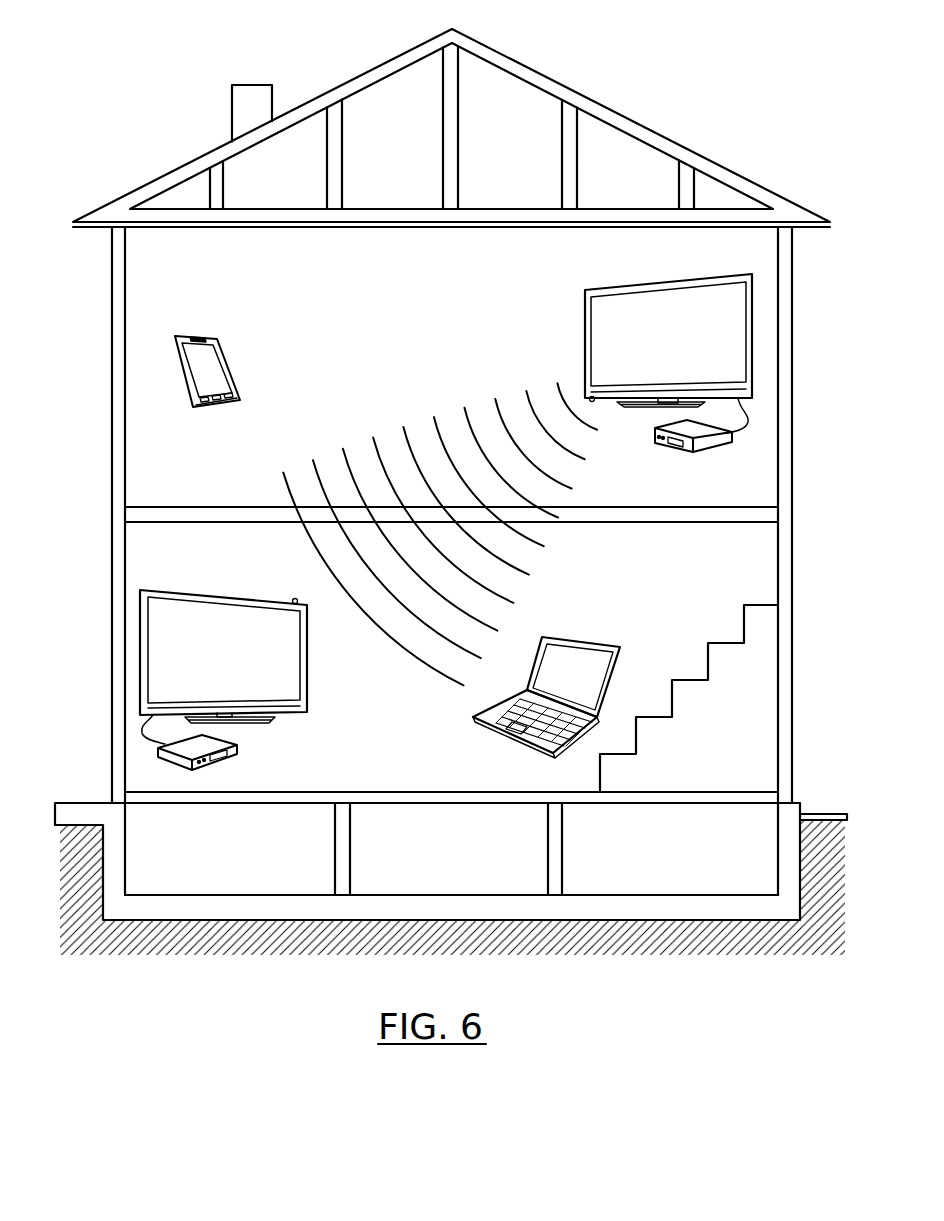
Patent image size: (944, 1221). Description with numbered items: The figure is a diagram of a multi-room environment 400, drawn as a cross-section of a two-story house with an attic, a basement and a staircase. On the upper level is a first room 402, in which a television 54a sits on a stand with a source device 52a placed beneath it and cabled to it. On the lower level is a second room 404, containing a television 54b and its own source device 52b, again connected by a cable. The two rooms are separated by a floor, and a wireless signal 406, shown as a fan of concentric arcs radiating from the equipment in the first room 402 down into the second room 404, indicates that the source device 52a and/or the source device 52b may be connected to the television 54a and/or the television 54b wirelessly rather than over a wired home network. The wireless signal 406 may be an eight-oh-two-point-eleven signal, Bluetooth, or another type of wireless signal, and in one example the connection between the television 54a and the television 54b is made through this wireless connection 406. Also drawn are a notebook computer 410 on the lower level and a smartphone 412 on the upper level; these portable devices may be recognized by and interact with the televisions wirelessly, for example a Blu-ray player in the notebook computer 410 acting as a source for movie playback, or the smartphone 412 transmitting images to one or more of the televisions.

The multi-room environment 400 is at (160, 42).
The first room 402 is at (451, 381).
The second room 404 is at (451, 662).
The wireless signal 406 is at (376, 440).
The notebook computer 410 is at (578, 641).
The smartphone 412 is at (197, 334).
The television 54a is at (610, 289).
The source device 52a is at (700, 455).
The television 54b is at (203, 594).
The source device 52b is at (225, 760).